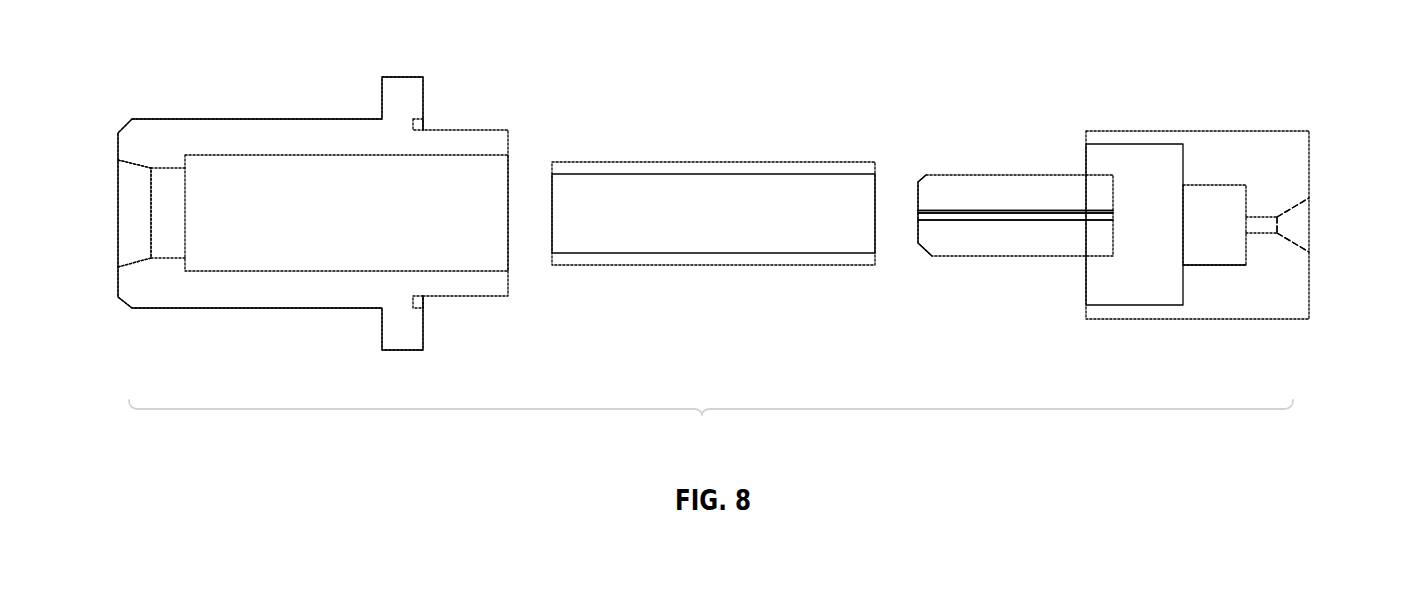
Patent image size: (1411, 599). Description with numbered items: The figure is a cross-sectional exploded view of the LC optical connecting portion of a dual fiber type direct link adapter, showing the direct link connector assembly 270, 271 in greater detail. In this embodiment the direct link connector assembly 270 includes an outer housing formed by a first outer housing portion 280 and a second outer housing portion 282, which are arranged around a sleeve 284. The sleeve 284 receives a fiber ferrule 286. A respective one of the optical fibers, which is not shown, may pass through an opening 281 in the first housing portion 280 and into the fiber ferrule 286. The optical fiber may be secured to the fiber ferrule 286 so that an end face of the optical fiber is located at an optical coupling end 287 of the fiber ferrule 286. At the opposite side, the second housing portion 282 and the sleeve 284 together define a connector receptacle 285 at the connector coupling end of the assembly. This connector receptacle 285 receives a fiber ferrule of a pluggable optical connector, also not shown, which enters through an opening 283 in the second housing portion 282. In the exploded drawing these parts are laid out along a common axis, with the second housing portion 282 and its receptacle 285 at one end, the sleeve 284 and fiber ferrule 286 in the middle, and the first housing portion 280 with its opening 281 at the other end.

The direct link connector assembly 270 is at (711, 423).
The direct link connector assembly 271 is at (711, 423).
The first outer housing portion 280 is at (1216, 140).
The opening 281 is at (1300, 228).
The second outer housing portion 282 is at (272, 124).
The opening 283 is at (130, 216).
The sleeve 284 is at (746, 168).
The connector receptacle 285 is at (346, 213).
The fiber ferrule 286 is at (980, 185).
The optical coupling end 287 is at (908, 210).